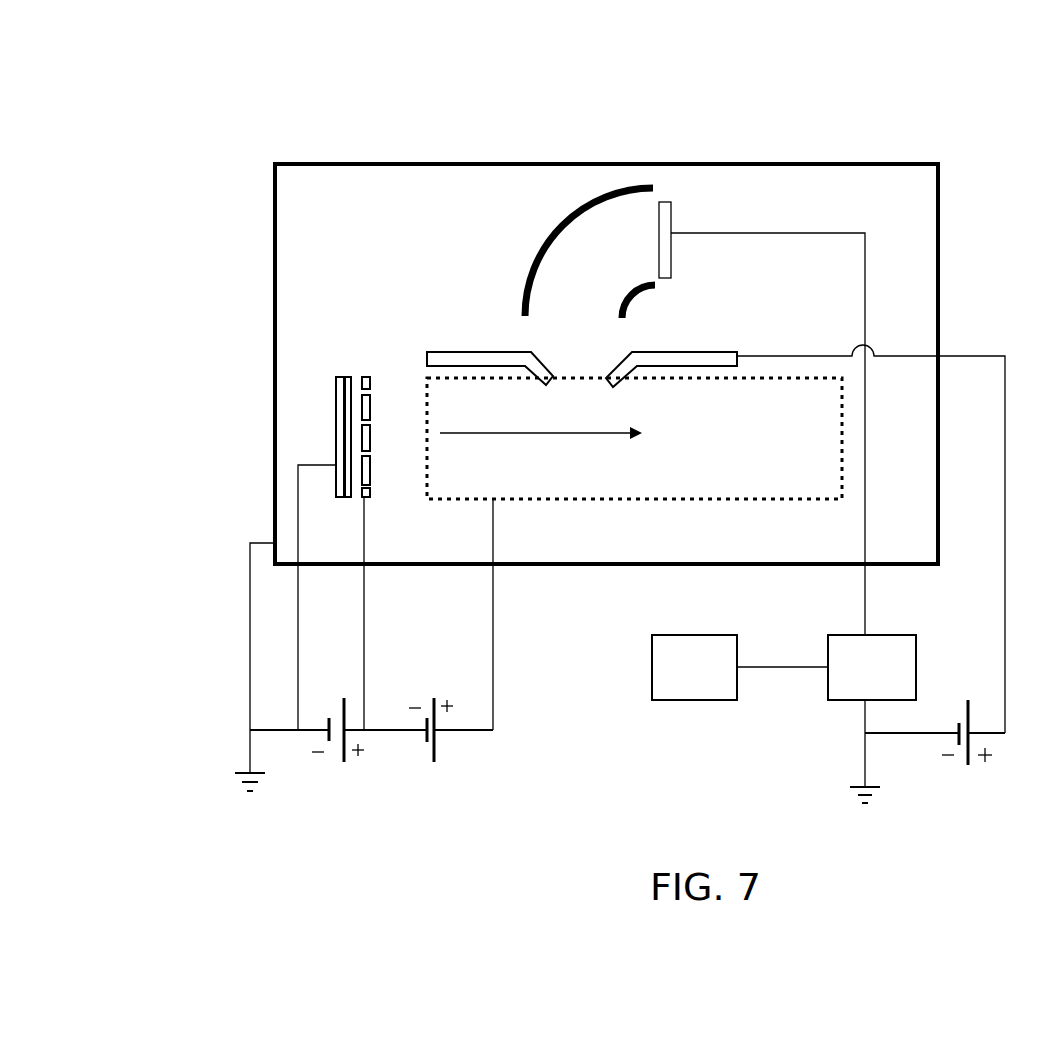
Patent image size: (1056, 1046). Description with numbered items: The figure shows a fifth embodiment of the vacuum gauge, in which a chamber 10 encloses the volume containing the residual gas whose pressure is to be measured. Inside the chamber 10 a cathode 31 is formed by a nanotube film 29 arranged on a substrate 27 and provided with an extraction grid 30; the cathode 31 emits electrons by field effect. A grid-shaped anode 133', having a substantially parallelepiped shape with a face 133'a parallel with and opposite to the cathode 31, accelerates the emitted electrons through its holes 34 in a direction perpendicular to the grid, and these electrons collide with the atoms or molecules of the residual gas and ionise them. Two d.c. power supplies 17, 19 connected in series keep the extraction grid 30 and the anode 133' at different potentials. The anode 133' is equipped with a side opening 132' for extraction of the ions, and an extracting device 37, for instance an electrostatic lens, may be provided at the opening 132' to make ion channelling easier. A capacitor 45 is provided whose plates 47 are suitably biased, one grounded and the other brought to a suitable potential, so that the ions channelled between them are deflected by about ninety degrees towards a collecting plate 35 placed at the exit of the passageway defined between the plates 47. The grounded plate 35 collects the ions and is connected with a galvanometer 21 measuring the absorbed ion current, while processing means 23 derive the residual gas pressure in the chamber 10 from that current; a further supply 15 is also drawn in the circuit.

The chamber 10 is at (938, 275).
The voltage source 15 is at (975, 776).
The d.c. power supply 17 is at (347, 784).
The d.c. power supply 19 is at (459, 760).
The galvanometer 21 is at (884, 678).
The processing means 23 is at (704, 678).
The substrate 27 is at (336, 421).
The nanotube film 29 is at (352, 376).
The extraction grid 30 is at (383, 376).
The cathode 31 is at (333, 358).
The holes 34 is at (408, 385).
The collecting plate 35 is at (672, 213).
The extracting device 37 is at (716, 367).
The capacitor 45 is at (592, 287).
The capacitor plates 47 is at (545, 232).
The side opening 132' is at (716, 539).
The grid-shaped anode 133' is at (634, 438).
The face of accelerating grid 133'a is at (512, 620).